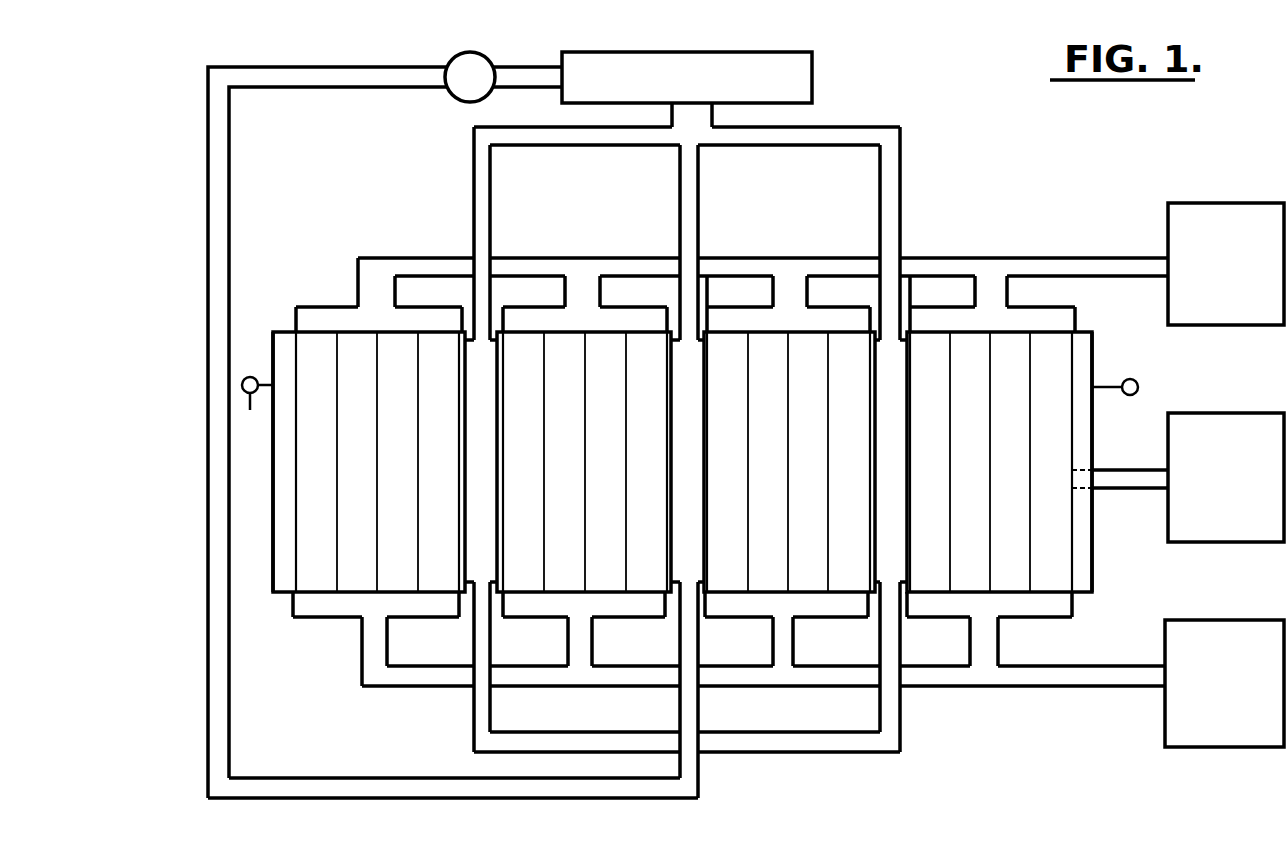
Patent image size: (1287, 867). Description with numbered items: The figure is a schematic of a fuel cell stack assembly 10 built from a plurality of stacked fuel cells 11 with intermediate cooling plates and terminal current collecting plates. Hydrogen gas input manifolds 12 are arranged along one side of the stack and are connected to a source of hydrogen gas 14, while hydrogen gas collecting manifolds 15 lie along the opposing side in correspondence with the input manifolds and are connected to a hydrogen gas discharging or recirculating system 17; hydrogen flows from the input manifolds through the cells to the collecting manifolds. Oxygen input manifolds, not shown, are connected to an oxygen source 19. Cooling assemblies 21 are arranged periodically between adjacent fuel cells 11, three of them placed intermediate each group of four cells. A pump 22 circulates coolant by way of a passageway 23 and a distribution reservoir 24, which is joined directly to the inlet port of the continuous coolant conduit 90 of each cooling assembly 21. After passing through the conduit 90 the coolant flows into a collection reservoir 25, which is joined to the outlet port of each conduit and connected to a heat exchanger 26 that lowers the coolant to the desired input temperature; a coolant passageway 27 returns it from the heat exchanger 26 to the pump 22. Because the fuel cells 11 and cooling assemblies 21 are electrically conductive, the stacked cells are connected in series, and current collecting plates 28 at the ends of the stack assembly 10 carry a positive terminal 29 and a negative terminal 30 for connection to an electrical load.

The fuel cell stack assembly 10 is at (910, 170).
The fuel cell 11 is at (358, 352).
The hydrogen gas input manifold 12 is at (410, 305).
The source of hydrogen gas 14 is at (1238, 279).
The hydrogen gas collecting manifold 15 is at (318, 620).
The hydrogen gas discharging or recirculating system 17 is at (1237, 680).
The oxygen source 19 is at (1242, 487).
The cooling assembly 21 is at (503, 308).
The pump 22 is at (450, 60).
The passageway 23 is at (205, 464).
The distribution reservoir 24 is at (870, 744).
The collection reservoir 25 is at (849, 128).
The heat exchanger 26 is at (795, 73).
The coolant passageway 27 is at (507, 66).
The current collecting plate 28 is at (286, 345).
The positive terminal 29 is at (255, 409).
The negative terminal 30 is at (1137, 381).
The continuous coolant conduit 90 is at (487, 208).